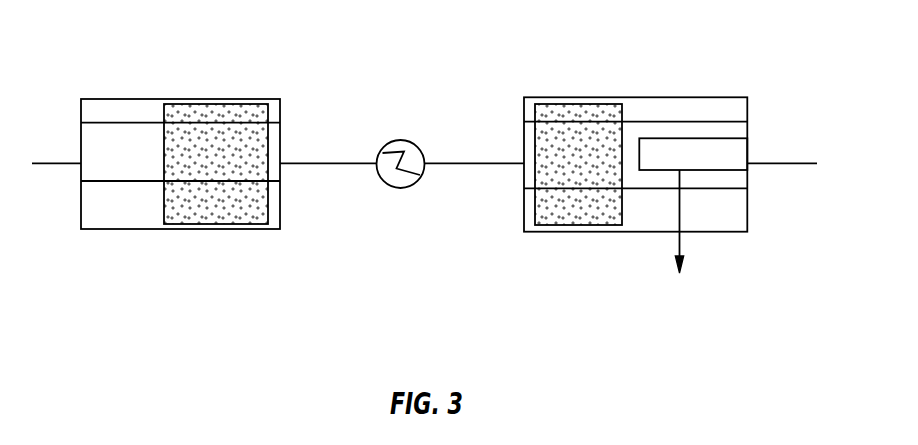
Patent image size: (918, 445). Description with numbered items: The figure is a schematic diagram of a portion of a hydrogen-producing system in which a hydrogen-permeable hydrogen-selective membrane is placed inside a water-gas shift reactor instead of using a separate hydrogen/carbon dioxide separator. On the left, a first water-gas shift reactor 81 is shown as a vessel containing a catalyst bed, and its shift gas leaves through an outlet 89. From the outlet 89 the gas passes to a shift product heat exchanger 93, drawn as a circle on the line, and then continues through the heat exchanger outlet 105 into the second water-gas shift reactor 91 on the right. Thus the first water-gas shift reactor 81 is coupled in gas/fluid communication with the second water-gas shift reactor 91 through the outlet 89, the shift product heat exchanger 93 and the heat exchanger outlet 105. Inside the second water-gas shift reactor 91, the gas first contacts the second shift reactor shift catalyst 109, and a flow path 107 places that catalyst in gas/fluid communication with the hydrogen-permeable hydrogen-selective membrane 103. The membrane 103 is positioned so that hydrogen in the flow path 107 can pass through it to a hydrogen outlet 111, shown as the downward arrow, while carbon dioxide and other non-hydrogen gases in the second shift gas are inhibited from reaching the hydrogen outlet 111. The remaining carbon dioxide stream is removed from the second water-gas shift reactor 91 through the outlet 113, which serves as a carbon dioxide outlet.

The first water-gas shift reactor 81 is at (128, 99).
The outlet 89 is at (333, 162).
The second water-gas shift reactor 91 is at (572, 97).
The shift product heat exchanger 93 is at (405, 138).
The hydrogen-permeable hydrogen-selective membrane 103 is at (735, 155).
The heat exchanger outlet 105 is at (485, 162).
The flow path 107 is at (658, 133).
The second shift reactor shift catalyst 109 is at (573, 215).
The hydrogen outlet 111 is at (682, 249).
The outlet 113 is at (787, 164).